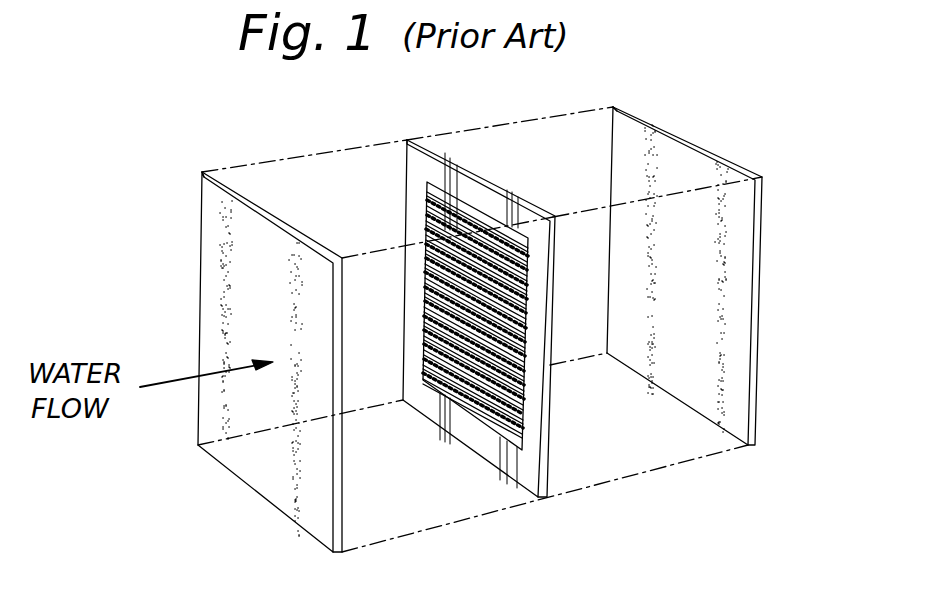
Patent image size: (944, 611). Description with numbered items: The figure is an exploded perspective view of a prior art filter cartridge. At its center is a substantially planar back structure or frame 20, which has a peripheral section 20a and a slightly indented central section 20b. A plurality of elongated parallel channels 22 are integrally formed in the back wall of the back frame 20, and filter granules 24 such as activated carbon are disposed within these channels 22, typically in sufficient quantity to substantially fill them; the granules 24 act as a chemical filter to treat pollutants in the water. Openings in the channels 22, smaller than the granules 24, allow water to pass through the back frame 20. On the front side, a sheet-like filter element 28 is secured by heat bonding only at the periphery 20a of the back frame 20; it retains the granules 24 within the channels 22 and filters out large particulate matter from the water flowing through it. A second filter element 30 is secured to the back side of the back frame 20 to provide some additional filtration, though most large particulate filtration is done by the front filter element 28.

The back frame 20 is at (547, 467).
The peripheral section 20a is at (475, 435).
The central section 20b is at (430, 345).
The channels 22 is at (430, 205).
The filter granules 24 is at (473, 213).
The filter element 28 is at (195, 429).
The second filter element 30 is at (755, 412).